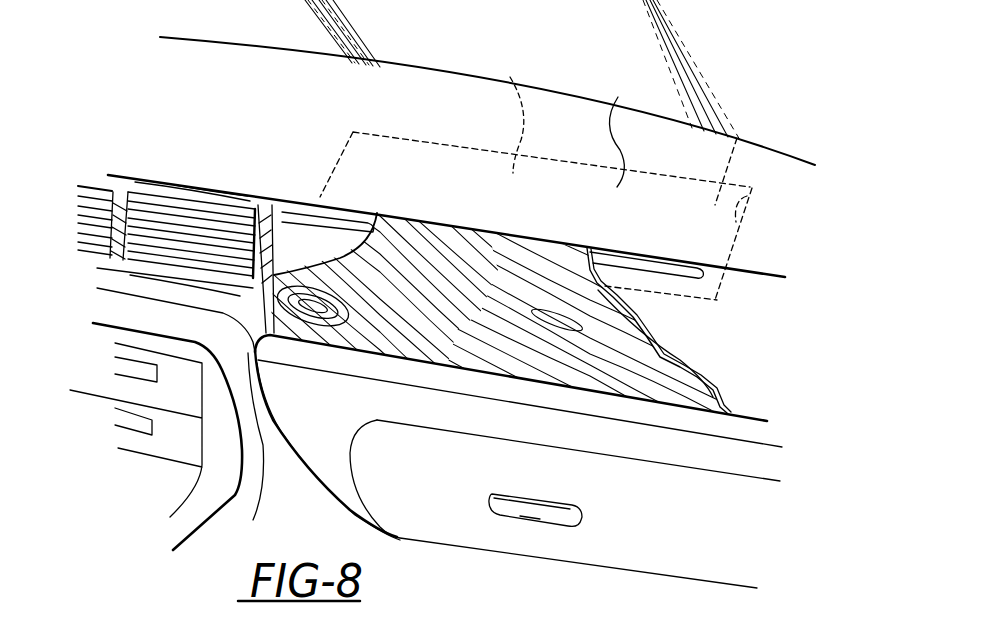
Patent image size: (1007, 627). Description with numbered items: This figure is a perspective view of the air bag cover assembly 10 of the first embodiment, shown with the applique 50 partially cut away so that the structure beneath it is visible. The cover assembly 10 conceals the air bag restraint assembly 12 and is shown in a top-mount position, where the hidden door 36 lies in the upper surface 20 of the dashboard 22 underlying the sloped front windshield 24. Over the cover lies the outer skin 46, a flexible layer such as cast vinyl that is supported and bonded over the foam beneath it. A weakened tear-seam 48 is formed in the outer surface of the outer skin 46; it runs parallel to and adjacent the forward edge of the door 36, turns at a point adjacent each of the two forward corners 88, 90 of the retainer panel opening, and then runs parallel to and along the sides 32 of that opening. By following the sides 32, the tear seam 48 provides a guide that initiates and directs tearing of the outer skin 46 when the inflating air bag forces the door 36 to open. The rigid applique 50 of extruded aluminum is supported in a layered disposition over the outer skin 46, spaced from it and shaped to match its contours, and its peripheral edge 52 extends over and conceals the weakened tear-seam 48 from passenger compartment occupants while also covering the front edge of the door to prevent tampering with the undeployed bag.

The cover assembly 10 is at (699, 373).
The air bag restraint assembly 12 is at (742, 135).
The upper surface 20 is at (200, 137).
The dashboard 22 is at (352, 79).
The sloped front windshield 24 is at (750, 71).
The side inner edges 32 is at (340, 163).
The hidden door 36 is at (527, 109).
The outer skin 46 is at (625, 123).
The weakened tear-seam 48 is at (633, 263).
The applique 50 is at (606, 334).
The peripheral edge 52 is at (488, 232).
The forward corner 88 is at (322, 267).
The forward corner 90 is at (717, 302).